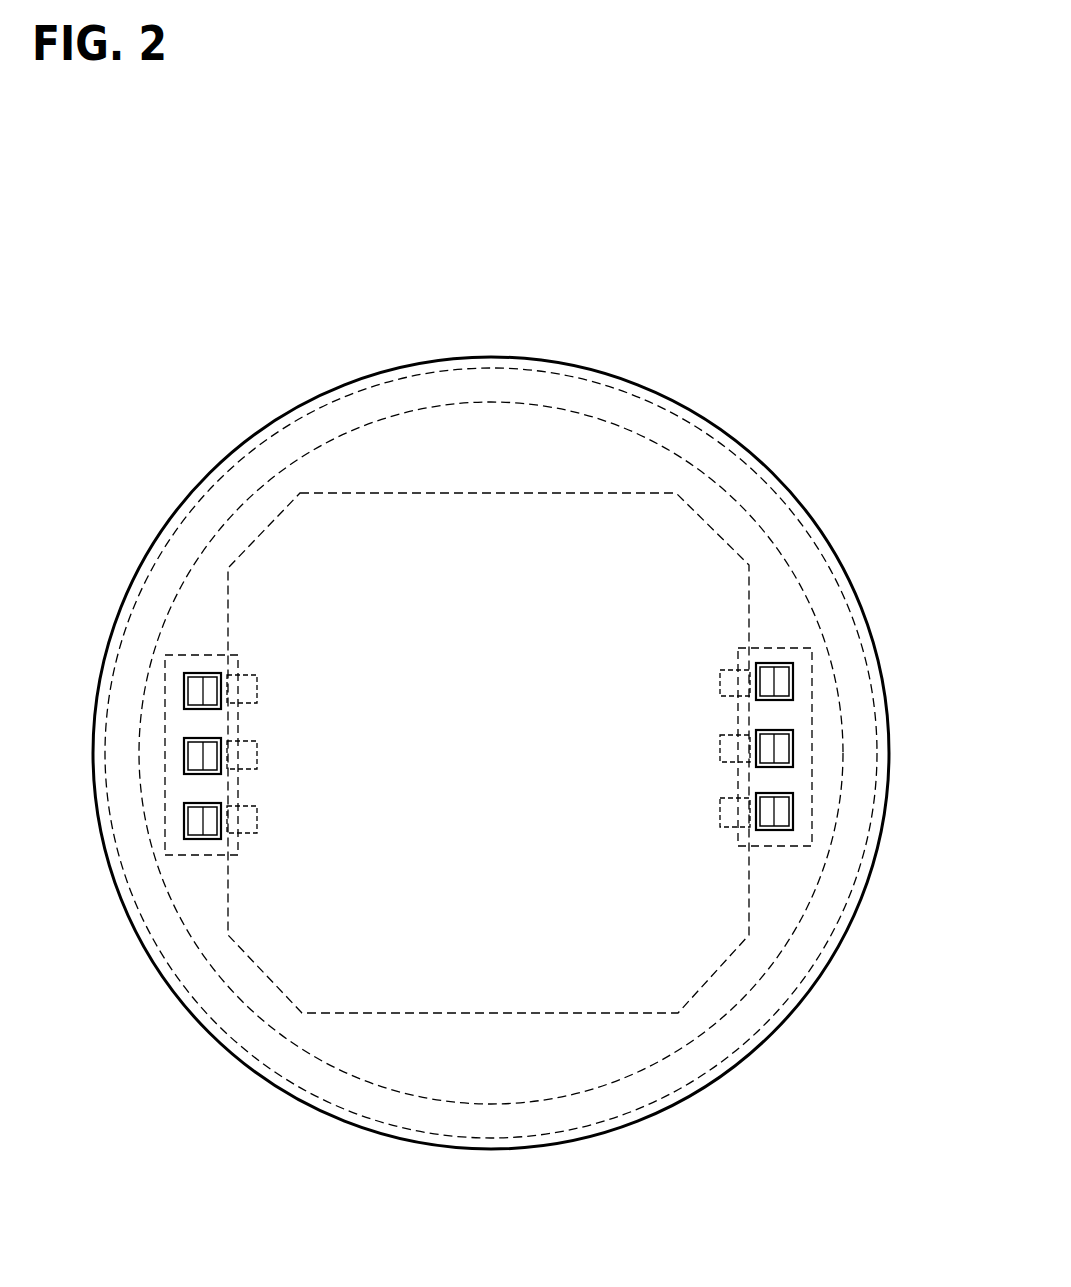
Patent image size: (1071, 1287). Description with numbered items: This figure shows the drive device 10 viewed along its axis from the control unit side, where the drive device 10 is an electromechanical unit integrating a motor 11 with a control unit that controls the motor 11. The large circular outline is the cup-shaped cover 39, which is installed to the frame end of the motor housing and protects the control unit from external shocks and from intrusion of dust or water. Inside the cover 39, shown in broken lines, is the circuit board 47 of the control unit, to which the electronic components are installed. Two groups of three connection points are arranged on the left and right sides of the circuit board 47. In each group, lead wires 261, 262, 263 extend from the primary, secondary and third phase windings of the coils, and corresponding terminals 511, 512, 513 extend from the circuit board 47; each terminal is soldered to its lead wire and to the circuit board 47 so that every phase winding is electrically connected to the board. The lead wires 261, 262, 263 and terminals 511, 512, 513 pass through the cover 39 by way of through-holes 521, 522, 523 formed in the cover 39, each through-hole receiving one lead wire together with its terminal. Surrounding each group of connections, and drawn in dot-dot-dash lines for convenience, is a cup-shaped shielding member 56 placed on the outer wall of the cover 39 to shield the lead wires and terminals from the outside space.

The drive device 10 is at (205, 422).
The motor 11 is at (198, 485).
The cover 39 is at (330, 389).
The circuit board 47 is at (637, 492).
The shielding member 56 is at (197, 655).
The lead wire 261 is at (195, 690).
The lead wire 262 is at (195, 755).
The lead wire 263 is at (195, 821).
The terminal 511 is at (208, 680).
The terminal 512 is at (209, 746).
The terminal 513 is at (209, 811).
The through-hole 521 is at (205, 692).
The through-hole 522 is at (205, 757).
The through-hole 523 is at (205, 821).